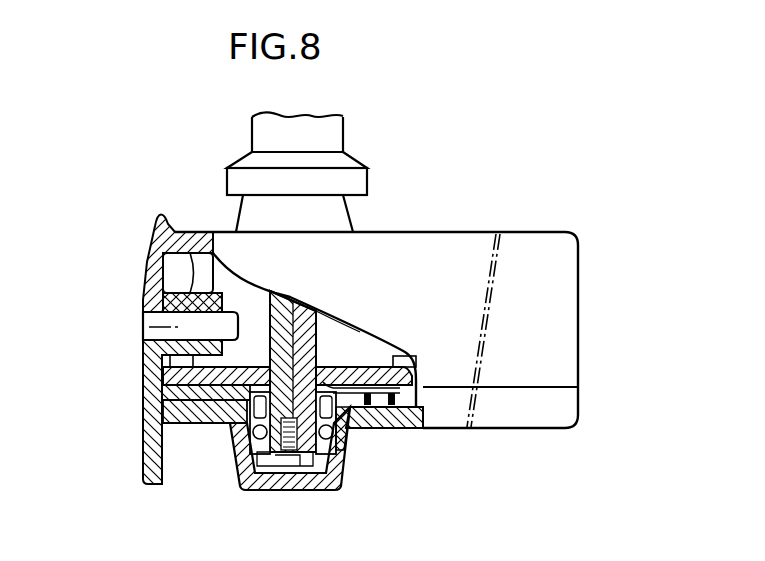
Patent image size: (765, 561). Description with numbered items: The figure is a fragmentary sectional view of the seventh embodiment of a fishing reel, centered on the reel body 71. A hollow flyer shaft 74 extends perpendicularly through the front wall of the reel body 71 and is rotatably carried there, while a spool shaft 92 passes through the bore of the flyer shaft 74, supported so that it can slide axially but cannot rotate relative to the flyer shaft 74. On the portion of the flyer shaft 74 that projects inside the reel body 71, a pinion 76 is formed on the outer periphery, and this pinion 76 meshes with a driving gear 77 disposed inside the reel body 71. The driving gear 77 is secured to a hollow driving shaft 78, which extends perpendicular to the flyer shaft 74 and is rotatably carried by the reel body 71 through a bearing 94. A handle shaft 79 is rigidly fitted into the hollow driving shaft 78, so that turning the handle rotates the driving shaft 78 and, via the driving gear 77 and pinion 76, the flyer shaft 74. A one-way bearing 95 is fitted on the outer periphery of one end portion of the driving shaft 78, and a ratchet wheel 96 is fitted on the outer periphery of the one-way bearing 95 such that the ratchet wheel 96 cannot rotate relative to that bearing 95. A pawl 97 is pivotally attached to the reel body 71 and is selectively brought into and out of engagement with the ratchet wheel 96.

The reel body 71 is at (425, 232).
The flyer shaft 74 is at (148, 300).
The pinion 76 is at (193, 290).
The driving gear 77 is at (179, 415).
The driving shaft 78 is at (318, 330).
The handle shaft 79 is at (295, 315).
The spool shaft 92 is at (148, 325).
The bearing 94 is at (298, 490).
The one-way bearing 95 is at (352, 440).
The ratchet wheel 96 is at (214, 428).
The pawl 97 is at (405, 428).